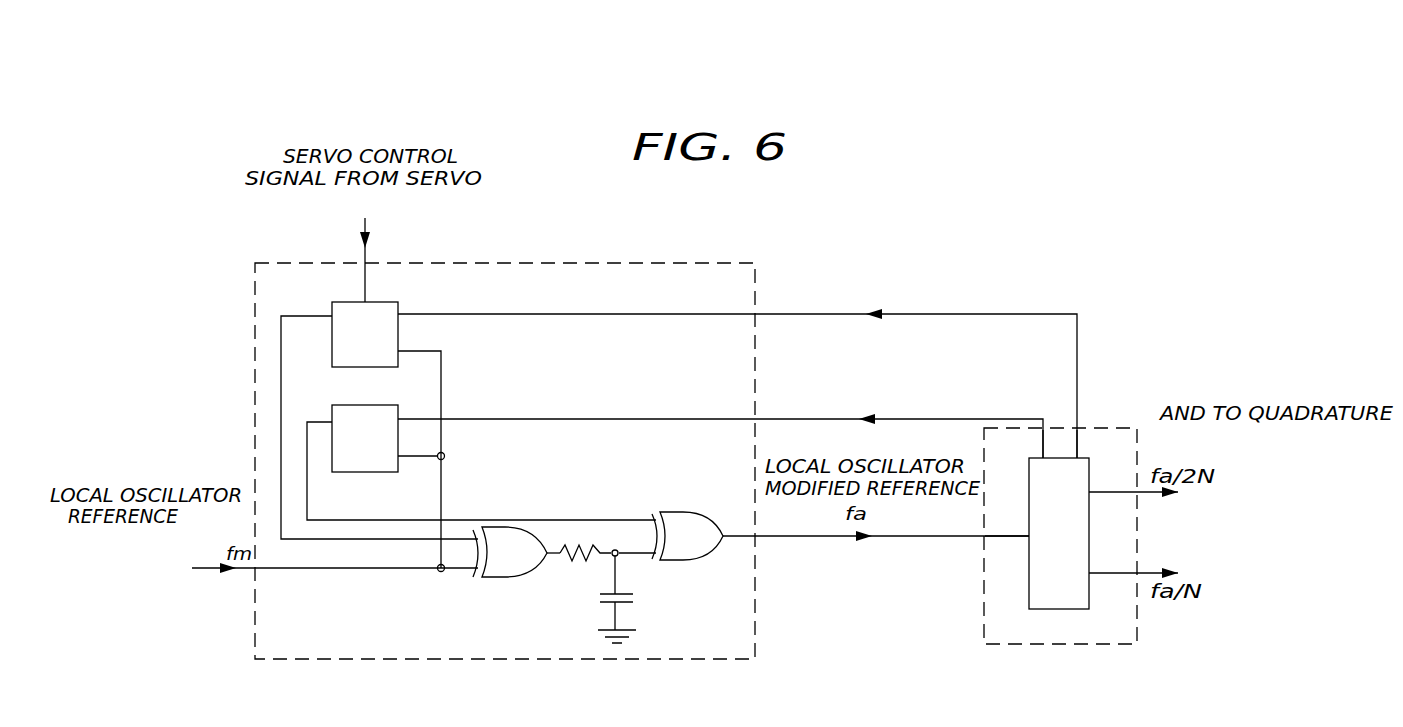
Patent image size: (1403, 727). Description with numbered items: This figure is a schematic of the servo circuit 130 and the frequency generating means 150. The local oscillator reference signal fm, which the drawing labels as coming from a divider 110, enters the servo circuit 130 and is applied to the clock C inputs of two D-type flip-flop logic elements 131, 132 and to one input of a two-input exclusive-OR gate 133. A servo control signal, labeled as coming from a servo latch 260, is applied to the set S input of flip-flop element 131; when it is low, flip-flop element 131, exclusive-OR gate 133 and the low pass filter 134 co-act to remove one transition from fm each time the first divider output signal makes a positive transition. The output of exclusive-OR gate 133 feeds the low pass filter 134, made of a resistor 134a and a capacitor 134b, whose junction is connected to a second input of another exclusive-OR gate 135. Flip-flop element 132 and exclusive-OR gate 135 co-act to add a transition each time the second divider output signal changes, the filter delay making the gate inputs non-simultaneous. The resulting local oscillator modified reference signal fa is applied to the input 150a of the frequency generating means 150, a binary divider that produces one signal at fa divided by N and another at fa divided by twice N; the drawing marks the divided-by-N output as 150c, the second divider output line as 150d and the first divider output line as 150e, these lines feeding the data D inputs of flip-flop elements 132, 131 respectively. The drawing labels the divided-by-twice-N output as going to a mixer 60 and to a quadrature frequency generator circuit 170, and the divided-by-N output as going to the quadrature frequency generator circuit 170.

The servo circuit 130 is at (556, 262).
The D-type flip-flop logic element 131 is at (397, 303).
The D-type flip-flop logic element 132 is at (371, 405).
The two-input exclusive-OR gate 133 is at (492, 583).
The low pass filter 134 is at (630, 582).
The resistor 134a is at (583, 554).
The capacitor 134b is at (634, 597).
The two-input exclusive-OR gate 135 is at (688, 511).
The frequency generating means 150 is at (1090, 428).
The input of frequency generating means 150a is at (1006, 539).
The divide-by-N output 150c is at (1112, 576).
The Q14 output 150d is at (1019, 444).
The Q13 output 150e is at (1109, 444).
The servo latch 260 is at (362, 200).
The divider 110 is at (133, 551).
The mixer 60 is at (1241, 389).
The quadrature frequency generator circuit 170 is at (1277, 548).